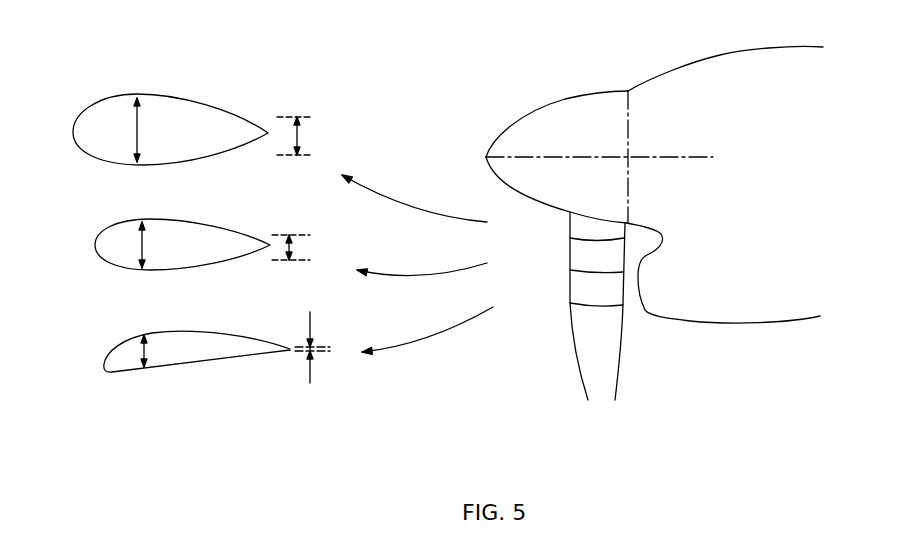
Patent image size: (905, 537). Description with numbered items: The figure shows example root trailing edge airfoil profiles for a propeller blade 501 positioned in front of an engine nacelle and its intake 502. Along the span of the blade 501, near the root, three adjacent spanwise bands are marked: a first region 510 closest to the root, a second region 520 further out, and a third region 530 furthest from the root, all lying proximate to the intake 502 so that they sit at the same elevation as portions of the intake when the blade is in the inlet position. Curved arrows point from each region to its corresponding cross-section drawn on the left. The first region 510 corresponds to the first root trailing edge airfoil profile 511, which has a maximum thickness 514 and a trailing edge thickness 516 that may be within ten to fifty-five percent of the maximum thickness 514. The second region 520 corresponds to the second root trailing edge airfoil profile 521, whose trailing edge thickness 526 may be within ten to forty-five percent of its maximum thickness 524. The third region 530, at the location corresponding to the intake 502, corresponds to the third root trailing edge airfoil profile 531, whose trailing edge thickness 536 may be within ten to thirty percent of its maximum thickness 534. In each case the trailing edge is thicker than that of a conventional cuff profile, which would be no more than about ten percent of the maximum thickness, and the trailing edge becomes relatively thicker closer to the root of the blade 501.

The blade 501 is at (583, 358).
The intake 502 is at (638, 285).
The first region 510 is at (570, 212).
The first root trailing edge airfoil profile 511 is at (227, 108).
The maximum thickness 514 is at (137, 130).
The trailing edge thickness 516 is at (298, 132).
The second region 520 is at (570, 257).
The second root trailing edge airfoil profile 521 is at (245, 230).
The maximum thickness 524 is at (142, 245).
The trailing edge thickness 526 is at (289, 248).
The third region 530 is at (570, 288).
The third root trailing edge airfoil profile 531 is at (247, 335).
The maximum thickness 534 is at (146, 350).
The trailing edge thickness 536 is at (310, 315).